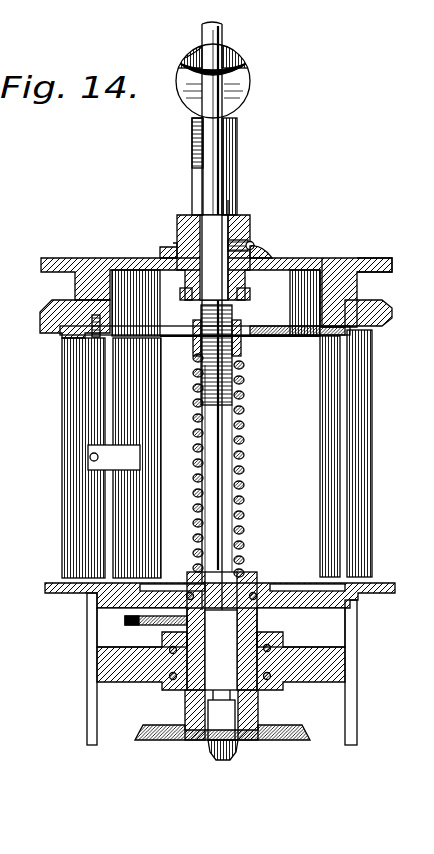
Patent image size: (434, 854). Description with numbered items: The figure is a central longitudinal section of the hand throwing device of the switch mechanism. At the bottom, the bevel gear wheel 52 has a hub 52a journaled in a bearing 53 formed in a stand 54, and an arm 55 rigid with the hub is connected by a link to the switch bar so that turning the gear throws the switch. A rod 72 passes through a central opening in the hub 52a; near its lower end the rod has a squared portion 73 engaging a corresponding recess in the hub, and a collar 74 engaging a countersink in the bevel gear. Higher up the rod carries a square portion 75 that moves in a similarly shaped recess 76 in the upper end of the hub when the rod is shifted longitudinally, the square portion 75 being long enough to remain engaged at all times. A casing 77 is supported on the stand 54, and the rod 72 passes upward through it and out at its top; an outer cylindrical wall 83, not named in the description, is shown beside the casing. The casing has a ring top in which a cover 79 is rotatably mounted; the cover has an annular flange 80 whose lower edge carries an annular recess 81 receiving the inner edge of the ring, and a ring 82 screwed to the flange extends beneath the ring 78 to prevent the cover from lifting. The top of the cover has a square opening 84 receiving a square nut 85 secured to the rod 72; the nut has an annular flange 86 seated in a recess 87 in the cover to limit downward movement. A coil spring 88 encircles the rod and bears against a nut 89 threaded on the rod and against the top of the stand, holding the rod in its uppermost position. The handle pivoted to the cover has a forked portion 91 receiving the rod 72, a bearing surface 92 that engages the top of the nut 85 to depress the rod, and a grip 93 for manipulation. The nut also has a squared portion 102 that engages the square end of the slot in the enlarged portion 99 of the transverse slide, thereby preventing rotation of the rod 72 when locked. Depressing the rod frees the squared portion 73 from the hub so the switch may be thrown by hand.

The bearing surface 92 is at (196, 58).
The forked portion 91 is at (232, 56).
The rod 72 is at (226, 138).
The annular flange 86 is at (180, 221).
The grip 93 is at (234, 193).
The square nut 85 is at (252, 240).
The recess 87 is at (174, 247).
The square opening 84 is at (266, 250).
The cover 79 is at (314, 266).
The annular flange 80 is at (360, 262).
The squared portion 102 is at (195, 272).
The enlarged portion 99 is at (250, 294).
The annular recess 81 is at (358, 300).
The ring 78 is at (392, 314).
The ring 82 is at (350, 331).
The outer cylinder 83 is at (100, 328).
The casing 77 is at (372, 364).
The nut 89 is at (190, 350).
The coil spring 88 is at (236, 372).
The arm 55 is at (126, 620).
The recess 76 is at (165, 642).
The square portion 75 is at (222, 631).
The bearing 53 is at (265, 650).
The stand 54 is at (356, 700).
The hub 52a is at (192, 702).
The squared portion 73 is at (222, 718).
The bevel gear wheel 52 is at (255, 740).
The collar 74 is at (240, 748).